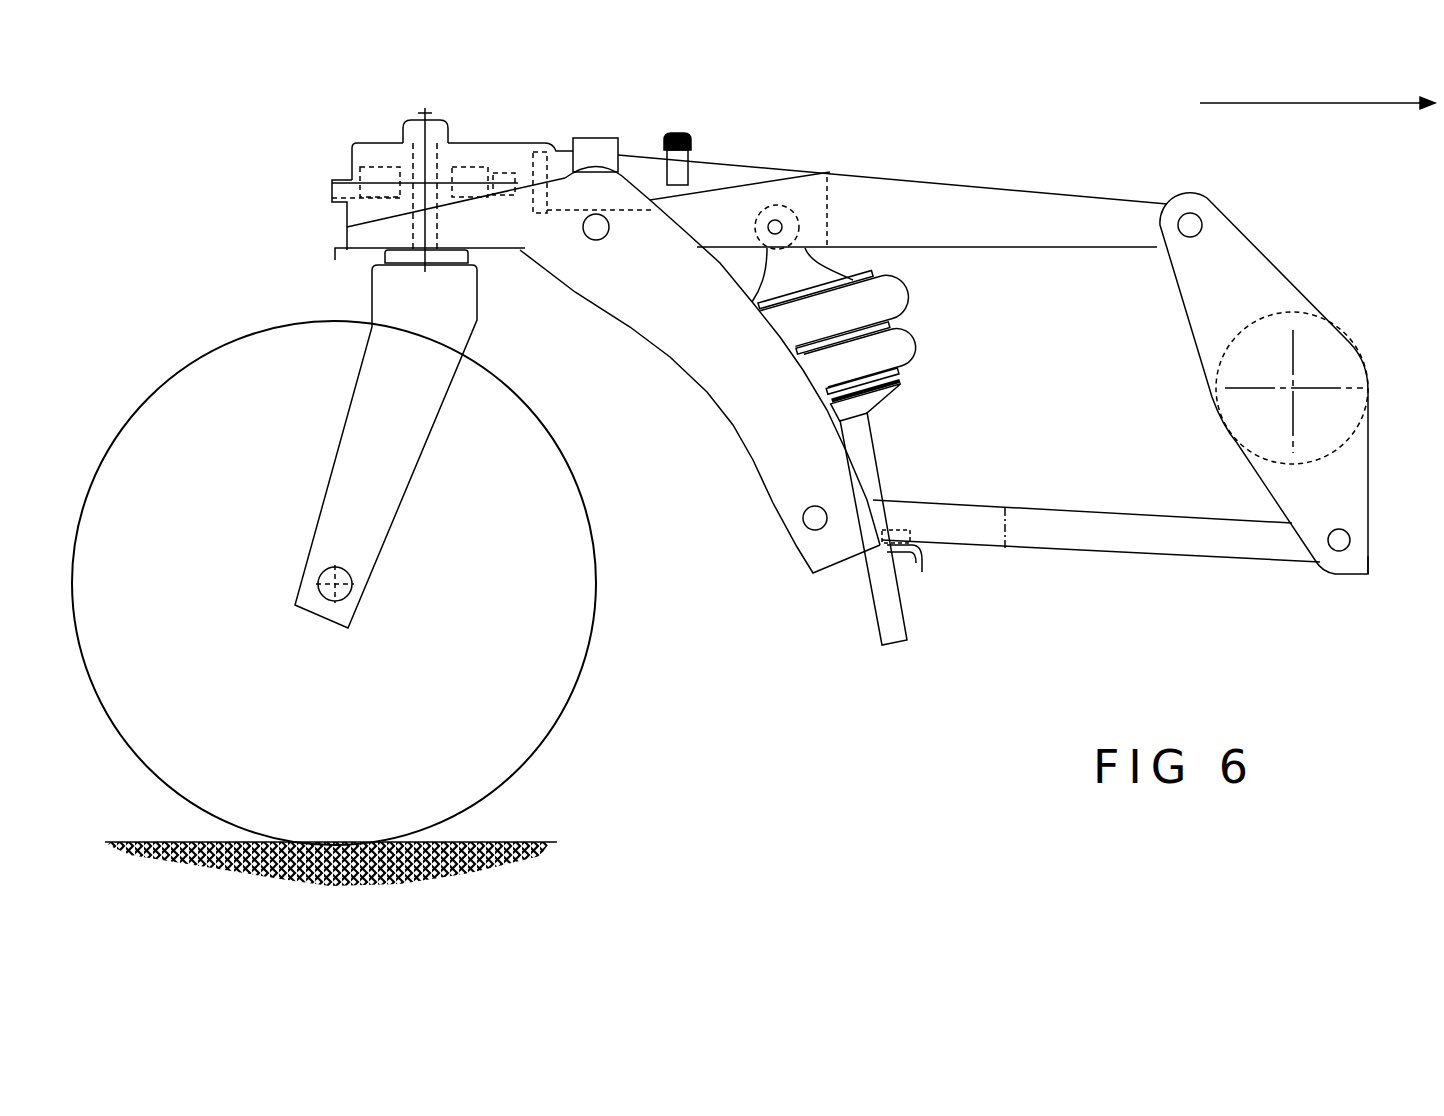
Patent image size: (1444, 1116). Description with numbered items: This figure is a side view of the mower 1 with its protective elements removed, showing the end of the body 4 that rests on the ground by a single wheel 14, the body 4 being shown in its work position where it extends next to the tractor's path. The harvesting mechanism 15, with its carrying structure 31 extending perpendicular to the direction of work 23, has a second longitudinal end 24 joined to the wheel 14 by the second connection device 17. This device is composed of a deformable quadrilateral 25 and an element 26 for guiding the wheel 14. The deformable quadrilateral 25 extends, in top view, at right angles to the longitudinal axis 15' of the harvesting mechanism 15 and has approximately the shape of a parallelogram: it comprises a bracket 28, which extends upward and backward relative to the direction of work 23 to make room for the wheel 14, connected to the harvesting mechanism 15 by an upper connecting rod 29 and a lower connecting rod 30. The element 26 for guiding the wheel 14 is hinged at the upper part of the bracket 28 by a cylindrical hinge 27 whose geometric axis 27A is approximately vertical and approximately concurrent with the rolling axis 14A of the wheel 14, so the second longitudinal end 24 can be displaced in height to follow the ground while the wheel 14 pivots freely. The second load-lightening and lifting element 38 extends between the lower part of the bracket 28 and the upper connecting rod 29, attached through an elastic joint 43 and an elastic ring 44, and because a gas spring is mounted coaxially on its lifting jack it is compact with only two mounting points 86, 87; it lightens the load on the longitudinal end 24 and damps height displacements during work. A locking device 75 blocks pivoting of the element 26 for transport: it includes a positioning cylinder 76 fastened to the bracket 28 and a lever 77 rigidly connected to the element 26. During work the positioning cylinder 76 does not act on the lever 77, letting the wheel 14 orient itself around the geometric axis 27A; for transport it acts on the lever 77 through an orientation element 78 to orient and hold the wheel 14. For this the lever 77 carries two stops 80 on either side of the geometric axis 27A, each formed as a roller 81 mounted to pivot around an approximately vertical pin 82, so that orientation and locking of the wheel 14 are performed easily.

The mower 1 is at (131, 212).
The body 4 is at (1359, 588).
The wheel 14 is at (560, 665).
The rolling axis 14A is at (347, 600).
The harvesting mechanism 15 is at (1134, 323).
The longitudinal axis 15' is at (1244, 407).
The second connection device 17 is at (994, 180).
The direction of work 23 is at (1310, 103).
The second longitudinal end 24 is at (1267, 271).
The deformable quadrilateral 25 is at (1092, 207).
The element for guiding wheel 26 is at (404, 442).
The cylindrical hinge 27 is at (442, 208).
The geometric axis 27A is at (437, 103).
The bracket 28 is at (760, 427).
The upper connecting rod 29 is at (995, 248).
The connecting rod 30 is at (1205, 547).
The carrying structure 31 is at (1337, 447).
The second load-lightening and lifting element 38 is at (920, 354).
The elastic joint 43 is at (912, 548).
The elastic ring 44 is at (795, 212).
The locking device 75 is at (650, 140).
The positioning cylinder 76 is at (690, 185).
The lever 77 is at (398, 145).
The orientation element 78 is at (530, 215).
The stops 80 is at (352, 157).
The roller 81 is at (360, 138).
The pin 82 is at (340, 233).
The mounting point 86 is at (798, 227).
The mounting point 87 is at (872, 576).